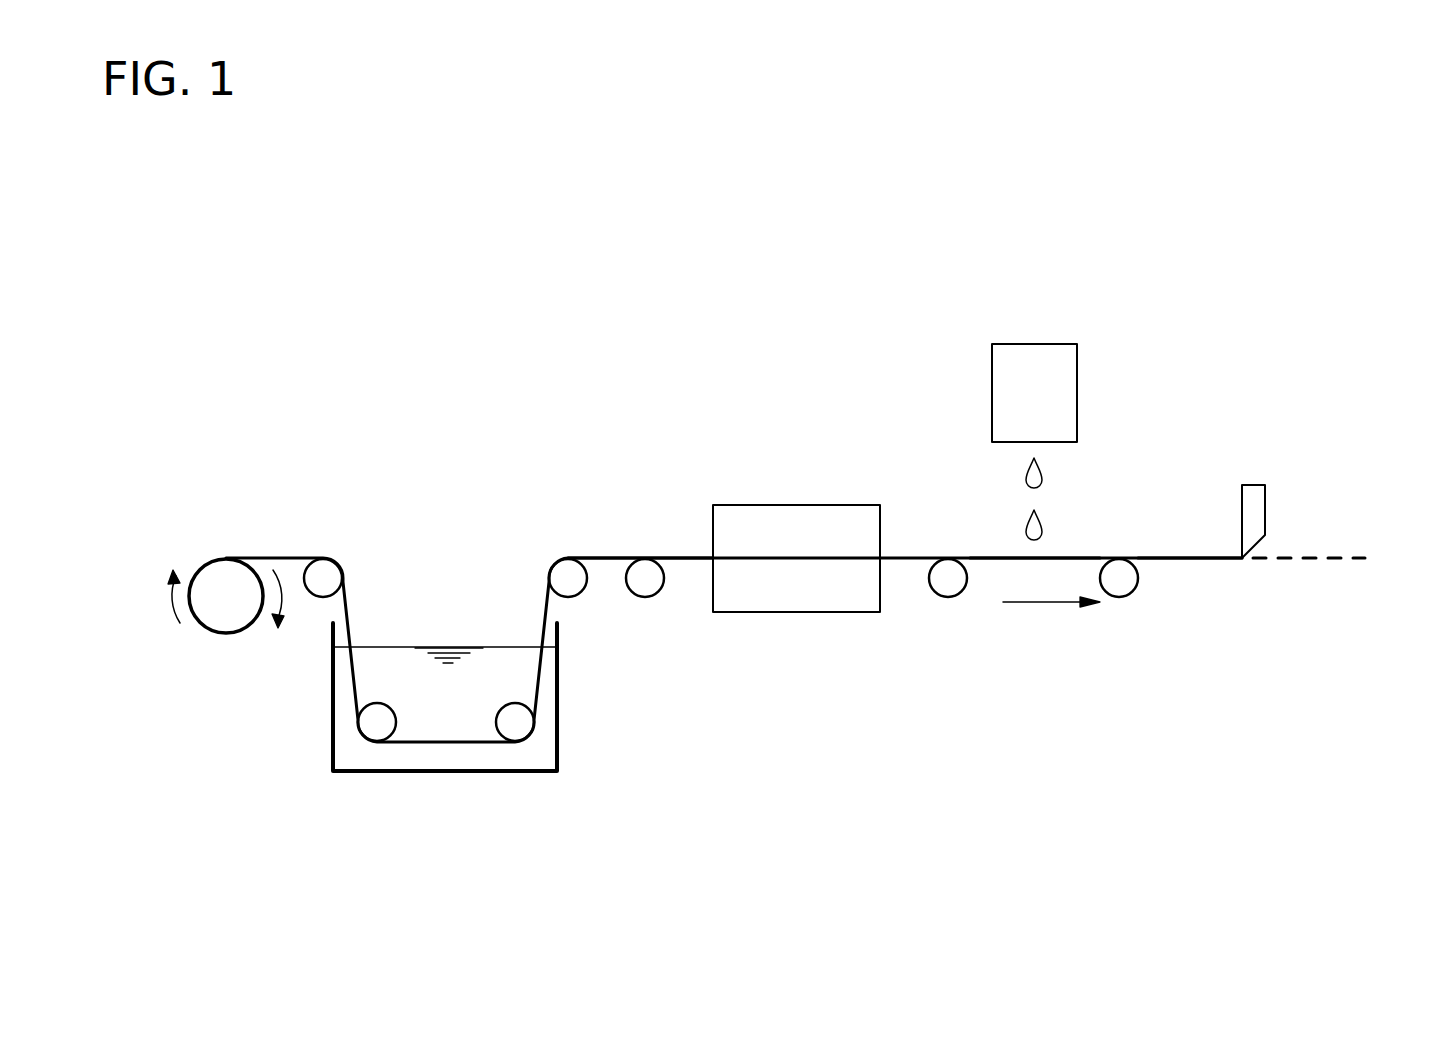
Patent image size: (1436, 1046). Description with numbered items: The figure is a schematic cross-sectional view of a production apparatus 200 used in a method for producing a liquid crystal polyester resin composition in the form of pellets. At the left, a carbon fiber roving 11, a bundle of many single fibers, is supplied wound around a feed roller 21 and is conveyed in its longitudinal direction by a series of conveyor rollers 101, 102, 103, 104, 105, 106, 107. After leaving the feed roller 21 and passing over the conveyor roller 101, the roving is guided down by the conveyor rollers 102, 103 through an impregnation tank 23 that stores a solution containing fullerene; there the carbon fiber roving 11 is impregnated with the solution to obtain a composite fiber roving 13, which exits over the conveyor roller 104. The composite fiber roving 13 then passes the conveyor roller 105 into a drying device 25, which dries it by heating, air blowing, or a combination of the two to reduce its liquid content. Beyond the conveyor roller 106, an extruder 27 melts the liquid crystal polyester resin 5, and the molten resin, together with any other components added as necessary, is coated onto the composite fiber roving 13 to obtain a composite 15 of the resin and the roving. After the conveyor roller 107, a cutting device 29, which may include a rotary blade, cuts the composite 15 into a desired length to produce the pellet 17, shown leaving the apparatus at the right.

The production apparatus 200 is at (1327, 281).
The carbon fiber roving 11 is at (287, 557).
The composite fiber roving 13 is at (602, 558).
The composite 15 is at (1173, 555).
The pellet 17 is at (1332, 555).
The feed roller 21 is at (223, 617).
The impregnation tank 23 is at (447, 754).
The drying device 25 is at (800, 523).
The extruder 27 is at (1033, 343).
The cutting device 29 is at (1252, 485).
The liquid crystal polyester resin 5 is at (1017, 560).
The conveyor roller 101 is at (307, 560).
The conveyor roller 102 is at (373, 703).
The conveyor roller 103 is at (520, 703).
The conveyor roller 104 is at (567, 597).
The conveyor roller 105 is at (663, 560).
The conveyor roller 106 is at (937, 560).
The conveyor roller 107 is at (1137, 560).